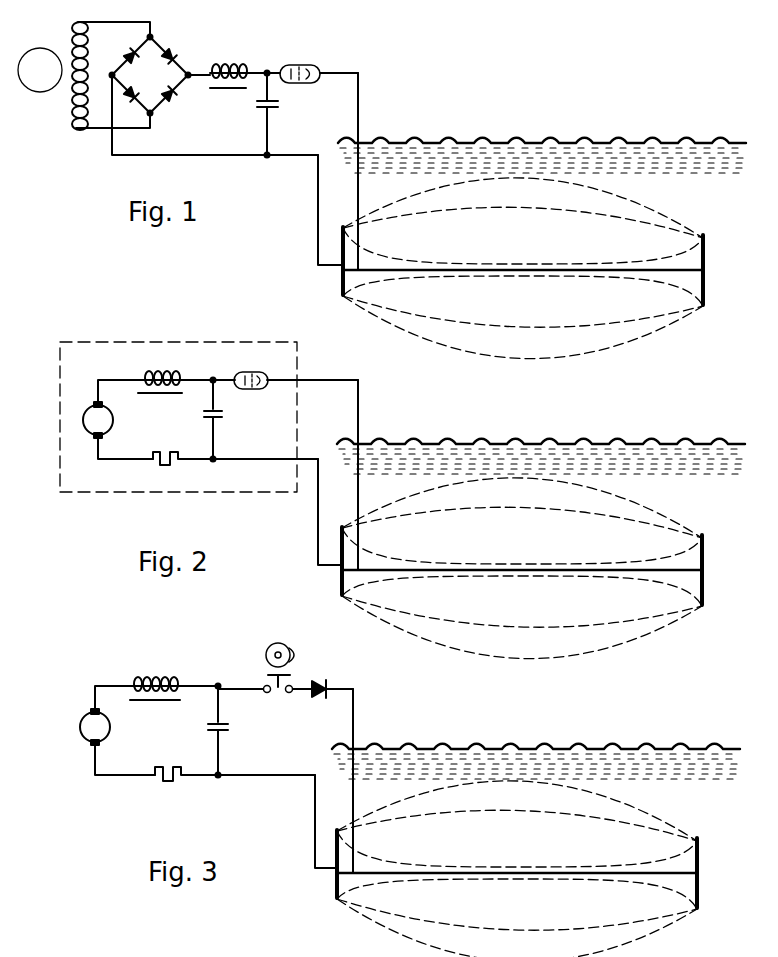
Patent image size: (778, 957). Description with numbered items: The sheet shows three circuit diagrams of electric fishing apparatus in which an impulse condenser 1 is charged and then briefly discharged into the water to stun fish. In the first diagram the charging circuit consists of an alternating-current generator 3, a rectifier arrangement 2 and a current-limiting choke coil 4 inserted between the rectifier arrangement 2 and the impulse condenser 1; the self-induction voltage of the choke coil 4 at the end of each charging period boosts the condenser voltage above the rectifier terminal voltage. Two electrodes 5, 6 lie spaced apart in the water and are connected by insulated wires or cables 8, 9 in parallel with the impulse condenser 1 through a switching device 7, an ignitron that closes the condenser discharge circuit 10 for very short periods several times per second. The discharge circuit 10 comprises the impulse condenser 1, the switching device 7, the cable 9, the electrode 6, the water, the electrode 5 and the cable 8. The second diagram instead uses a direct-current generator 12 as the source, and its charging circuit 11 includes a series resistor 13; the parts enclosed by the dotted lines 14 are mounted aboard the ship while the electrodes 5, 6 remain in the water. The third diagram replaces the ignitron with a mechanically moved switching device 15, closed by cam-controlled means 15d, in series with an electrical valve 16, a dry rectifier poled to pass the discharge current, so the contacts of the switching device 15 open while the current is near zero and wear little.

In FIG. 1, the impulse condenser 1 is at (256, 104).
In FIG. 2, the impulse condenser 1 is at (203, 415).
In FIG. 3, the impulse condenser 1 is at (230, 727).
In FIG. 1, the rectifier arrangement 2 is at (158, 87).
In FIG. 1, the alternating-current generator 3 is at (58, 89).
In FIG. 1, the choke coil 4 is at (221, 70).
In FIG. 2, the choke coil 4 is at (168, 371).
In FIG. 3, the choke coil 4 is at (158, 678).
In FIG. 1, the electrode 5 is at (340, 284).
In FIG. 2, the electrode 5 is at (326, 564).
In FIG. 3, the electrode 5 is at (321, 867).
In FIG. 1, the electrode 6 is at (705, 257).
In FIG. 2, the electrode 6 is at (714, 570).
In FIG. 3, the electrode 6 is at (709, 873).
In FIG. 1, the switching device 7 is at (297, 66).
In FIG. 2, the switching device 7 is at (257, 371).
In FIG. 1, the insulated wire or cable 8 is at (318, 219).
In FIG. 2, the insulated wire or cable 8 is at (318, 518).
In FIG. 3, the insulated wire or cable 8 is at (315, 824).
In FIG. 1, the insulated wire or cable 9 is at (495, 270).
In FIG. 2, the insulated wire or cable 9 is at (522, 551).
In FIG. 3, the insulated wire or cable 9 is at (517, 854).
In FIG. 1, the condenser discharge circuit 10 is at (352, 205).
In FIG. 2, the condenser discharge circuit 10 is at (531, 444).
In FIG. 3, the condenser discharge circuit 10 is at (530, 777).
In FIG. 1, the charging circuit 11 is at (208, 137).
In FIG. 2, the charging circuit 11 is at (157, 431).
In FIG. 3, the charging circuit 11 is at (166, 741).
In FIG. 2, the direct-current generator 12 is at (83, 420).
In FIG. 3, the direct-current generator 12 is at (80, 727).
In FIG. 2, the series resistor 13 is at (164, 467).
In FIG. 3, the series resistor 13 is at (174, 783).
In FIG. 2, the dotted lines 14 is at (122, 342).
In FIG. 3, the switching device 15 is at (283, 696).
In FIG. 3, the cam 15d is at (255, 656).
In FIG. 3, the electrical valve 16 is at (319, 683).